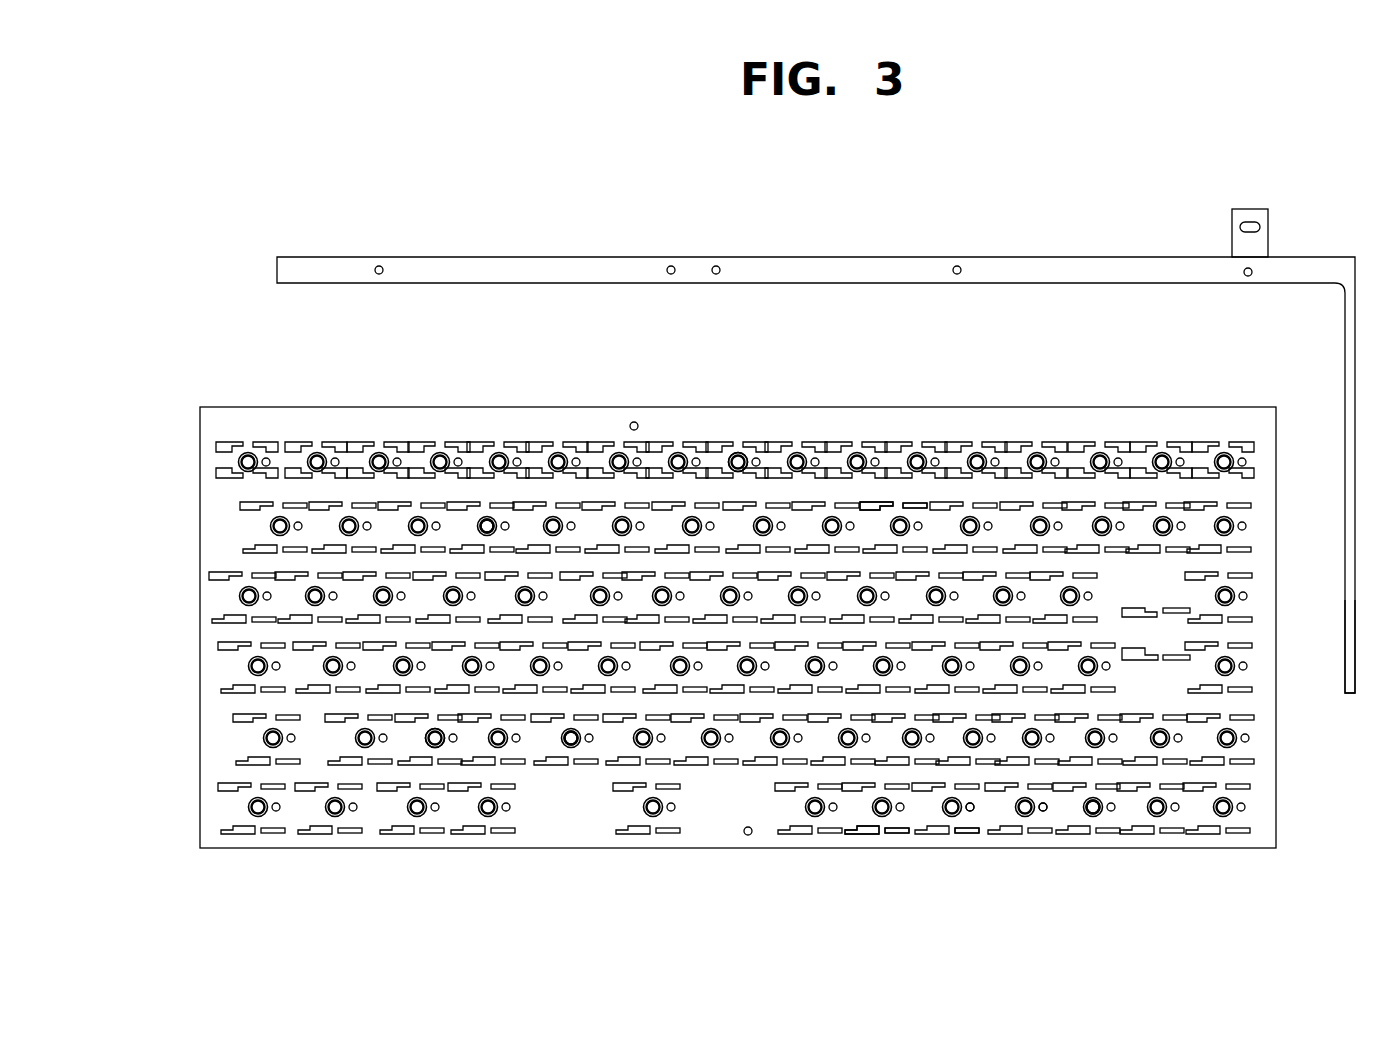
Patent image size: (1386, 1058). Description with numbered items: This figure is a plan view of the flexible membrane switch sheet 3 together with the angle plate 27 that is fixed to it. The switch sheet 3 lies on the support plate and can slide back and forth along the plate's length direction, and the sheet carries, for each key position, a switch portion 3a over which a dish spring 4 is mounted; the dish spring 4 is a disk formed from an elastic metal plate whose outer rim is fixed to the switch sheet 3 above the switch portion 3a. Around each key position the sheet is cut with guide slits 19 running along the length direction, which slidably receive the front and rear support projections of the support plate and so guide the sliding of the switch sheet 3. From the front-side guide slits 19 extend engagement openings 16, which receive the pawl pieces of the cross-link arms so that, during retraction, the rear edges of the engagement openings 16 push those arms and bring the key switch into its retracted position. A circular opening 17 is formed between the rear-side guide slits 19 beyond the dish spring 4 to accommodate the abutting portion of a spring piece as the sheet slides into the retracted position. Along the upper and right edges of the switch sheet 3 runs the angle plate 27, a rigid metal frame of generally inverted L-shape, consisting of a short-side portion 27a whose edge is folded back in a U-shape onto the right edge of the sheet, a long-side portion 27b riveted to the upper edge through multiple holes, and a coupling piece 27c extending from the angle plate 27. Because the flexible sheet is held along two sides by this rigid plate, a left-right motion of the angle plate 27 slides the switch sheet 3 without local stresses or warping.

The switch sheet 3 is at (535, 810).
The switch portion 3a is at (740, 456).
The dish spring 4 is at (493, 520).
The engagement opening 16 is at (870, 502).
The circular opening 17 is at (972, 811).
The guide slit 19 is at (925, 503).
The angle plate 27 is at (1050, 238).
The short-side portion 27a is at (1350, 690).
The long-side portion 27b is at (862, 268).
The coupling piece 27c is at (1258, 243).